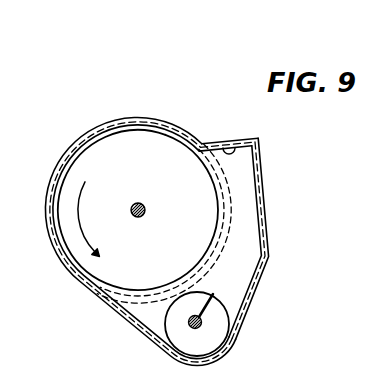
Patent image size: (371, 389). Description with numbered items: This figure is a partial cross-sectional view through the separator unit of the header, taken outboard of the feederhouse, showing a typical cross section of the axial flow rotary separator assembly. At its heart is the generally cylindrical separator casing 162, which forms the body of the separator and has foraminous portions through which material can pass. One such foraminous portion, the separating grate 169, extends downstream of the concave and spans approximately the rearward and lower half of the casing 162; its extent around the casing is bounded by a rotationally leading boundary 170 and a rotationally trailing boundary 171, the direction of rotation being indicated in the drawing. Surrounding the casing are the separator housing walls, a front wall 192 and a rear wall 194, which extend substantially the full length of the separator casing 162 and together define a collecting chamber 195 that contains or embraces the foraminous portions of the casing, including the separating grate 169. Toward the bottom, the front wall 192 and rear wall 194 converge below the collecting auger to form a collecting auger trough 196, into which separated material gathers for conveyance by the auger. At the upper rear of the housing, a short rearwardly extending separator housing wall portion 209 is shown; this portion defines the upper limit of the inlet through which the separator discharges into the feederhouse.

The separator casing 162 is at (84, 133).
The separating grate 169 is at (228, 218).
The rotationally leading boundary 170 is at (86, 279).
The rotationally trailing boundary 171 is at (199, 157).
The separator housing front wall 192 is at (114, 310).
The separator housing rear wall 194 is at (263, 188).
The collecting chamber 195 is at (248, 283).
The collecting auger trough 196 is at (218, 358).
The separator housing wall portion 209 is at (233, 146).